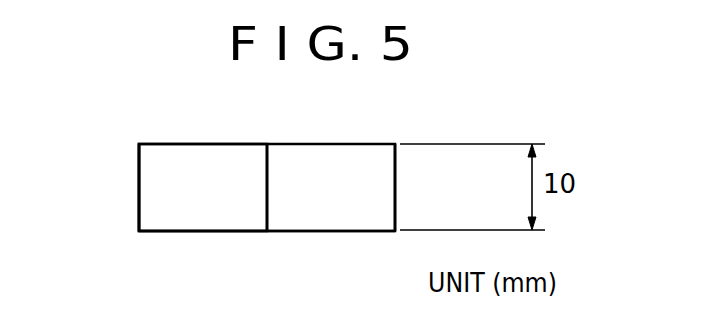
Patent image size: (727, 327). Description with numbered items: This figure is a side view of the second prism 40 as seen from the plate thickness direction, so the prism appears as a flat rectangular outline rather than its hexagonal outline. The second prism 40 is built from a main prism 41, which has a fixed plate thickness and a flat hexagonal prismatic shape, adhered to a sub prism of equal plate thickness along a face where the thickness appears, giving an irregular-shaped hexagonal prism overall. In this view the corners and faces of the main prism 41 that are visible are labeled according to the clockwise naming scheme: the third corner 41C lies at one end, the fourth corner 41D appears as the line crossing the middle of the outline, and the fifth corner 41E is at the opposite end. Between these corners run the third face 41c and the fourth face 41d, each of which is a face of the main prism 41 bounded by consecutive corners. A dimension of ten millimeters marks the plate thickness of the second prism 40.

The second prism 40 is at (372, 133).
The main prism 41 is at (206, 158).
The fourth corner 41D is at (267, 188).
The fifth corner 41E is at (139, 190).
The third corner 41C is at (396, 185).
The fourth face 41d is at (202, 210).
The third face 41c is at (318, 210).